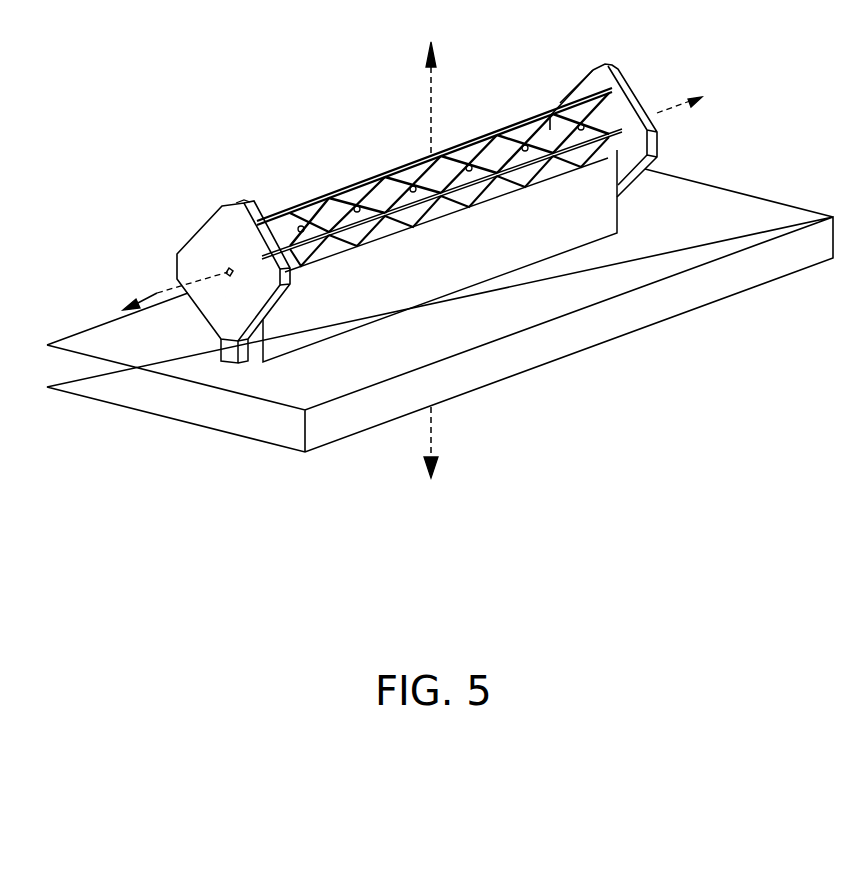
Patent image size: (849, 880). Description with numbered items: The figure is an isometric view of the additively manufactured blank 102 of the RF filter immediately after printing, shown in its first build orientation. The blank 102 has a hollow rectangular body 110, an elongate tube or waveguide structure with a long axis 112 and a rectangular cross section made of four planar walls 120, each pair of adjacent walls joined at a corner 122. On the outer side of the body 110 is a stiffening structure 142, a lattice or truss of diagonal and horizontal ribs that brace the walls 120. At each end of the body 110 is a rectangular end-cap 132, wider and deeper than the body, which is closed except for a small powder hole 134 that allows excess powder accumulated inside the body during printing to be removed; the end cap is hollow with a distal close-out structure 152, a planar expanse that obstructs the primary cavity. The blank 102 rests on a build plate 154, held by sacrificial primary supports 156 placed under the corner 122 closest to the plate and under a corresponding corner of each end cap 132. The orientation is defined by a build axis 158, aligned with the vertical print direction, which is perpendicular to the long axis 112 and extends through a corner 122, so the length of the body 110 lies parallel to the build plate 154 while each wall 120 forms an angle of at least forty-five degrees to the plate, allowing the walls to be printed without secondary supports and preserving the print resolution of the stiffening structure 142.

The additively manufactured blank 102 is at (423, 207).
The hollow rectangular body 110 is at (571, 100).
The long axis 112 is at (157, 295).
The planar walls 120 is at (410, 164).
The corner 122 is at (343, 188).
The end-cap 132 is at (217, 227).
The powder hole 134 is at (234, 276).
The stiffening structure 142 is at (425, 232).
The distal close-out structure 152 is at (225, 298).
The build plate 154 is at (763, 213).
The sacrificial primary supports 156 is at (608, 213).
The build axis 158 is at (431, 79).